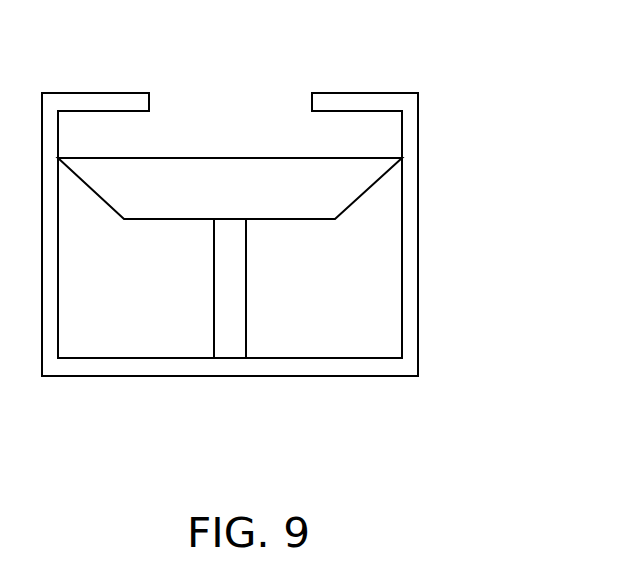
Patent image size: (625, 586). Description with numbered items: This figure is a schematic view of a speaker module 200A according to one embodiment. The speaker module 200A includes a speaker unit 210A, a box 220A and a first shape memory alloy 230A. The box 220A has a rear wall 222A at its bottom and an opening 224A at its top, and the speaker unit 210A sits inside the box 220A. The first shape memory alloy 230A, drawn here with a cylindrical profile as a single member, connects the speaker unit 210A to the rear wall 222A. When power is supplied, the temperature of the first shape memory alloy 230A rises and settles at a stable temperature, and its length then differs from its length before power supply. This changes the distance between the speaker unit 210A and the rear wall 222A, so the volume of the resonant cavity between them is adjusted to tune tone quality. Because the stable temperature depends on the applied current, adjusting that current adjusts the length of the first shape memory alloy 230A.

The speaker module 200A is at (283, 233).
The speaker unit 210A is at (333, 195).
The box 220A is at (402, 129).
The rear wall 222A is at (152, 359).
The opening 224A is at (228, 110).
The first shape memory alloy 230A is at (236, 332).